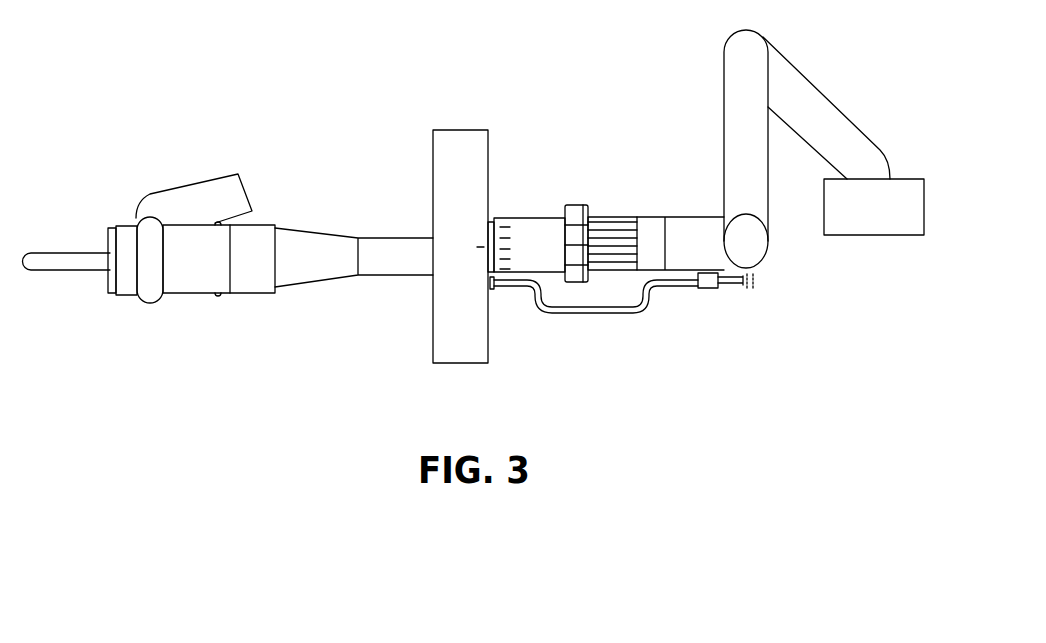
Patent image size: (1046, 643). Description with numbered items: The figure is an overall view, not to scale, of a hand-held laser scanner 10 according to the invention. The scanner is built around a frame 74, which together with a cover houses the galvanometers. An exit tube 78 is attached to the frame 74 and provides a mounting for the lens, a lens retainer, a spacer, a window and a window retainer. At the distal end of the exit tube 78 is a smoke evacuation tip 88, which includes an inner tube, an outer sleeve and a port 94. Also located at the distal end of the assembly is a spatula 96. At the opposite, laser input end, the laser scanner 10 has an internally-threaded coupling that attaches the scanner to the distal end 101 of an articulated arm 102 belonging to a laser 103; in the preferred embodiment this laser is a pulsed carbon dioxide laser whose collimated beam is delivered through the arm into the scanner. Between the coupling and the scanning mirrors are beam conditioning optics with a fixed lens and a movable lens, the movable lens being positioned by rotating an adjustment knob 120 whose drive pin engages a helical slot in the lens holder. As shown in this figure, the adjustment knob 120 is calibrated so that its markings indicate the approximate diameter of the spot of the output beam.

The laser scanner 10 is at (429, 108).
The frame 74 is at (488, 323).
The exit tube 78 is at (325, 233).
The smoke evacuation tip 88 is at (187, 305).
The port 94 is at (208, 181).
The spatula 96 is at (72, 267).
The distal end of articulated arm 101 is at (696, 270).
The articulated arm 102 is at (723, 85).
The laser 103 is at (862, 235).
The adjustment knob 120 is at (585, 205).